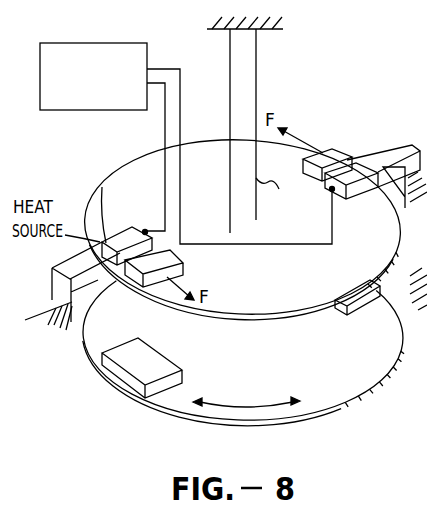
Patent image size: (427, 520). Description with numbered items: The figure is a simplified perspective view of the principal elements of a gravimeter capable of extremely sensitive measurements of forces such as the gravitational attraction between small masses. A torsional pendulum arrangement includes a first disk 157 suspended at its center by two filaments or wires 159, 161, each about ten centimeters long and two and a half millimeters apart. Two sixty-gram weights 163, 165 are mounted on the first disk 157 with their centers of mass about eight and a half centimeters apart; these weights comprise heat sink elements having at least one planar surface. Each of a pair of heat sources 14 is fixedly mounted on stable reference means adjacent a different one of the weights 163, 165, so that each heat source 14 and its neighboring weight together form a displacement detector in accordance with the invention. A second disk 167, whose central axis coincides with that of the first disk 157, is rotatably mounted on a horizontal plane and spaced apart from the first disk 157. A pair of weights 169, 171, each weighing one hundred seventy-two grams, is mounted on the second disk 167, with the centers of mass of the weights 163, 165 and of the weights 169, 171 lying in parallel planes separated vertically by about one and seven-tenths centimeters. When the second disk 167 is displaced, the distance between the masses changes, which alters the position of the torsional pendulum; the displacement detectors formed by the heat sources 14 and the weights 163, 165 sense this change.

The heat source 14 is at (103, 187).
The first disk 157 is at (292, 273).
The filament or wire 159 is at (280, 191).
The filament or wire 161 is at (232, 176).
The weight 163 is at (167, 252).
The weight 165 is at (345, 153).
The second disk 167 is at (320, 393).
The weight 169 is at (125, 363).
The weight 171 is at (380, 293).